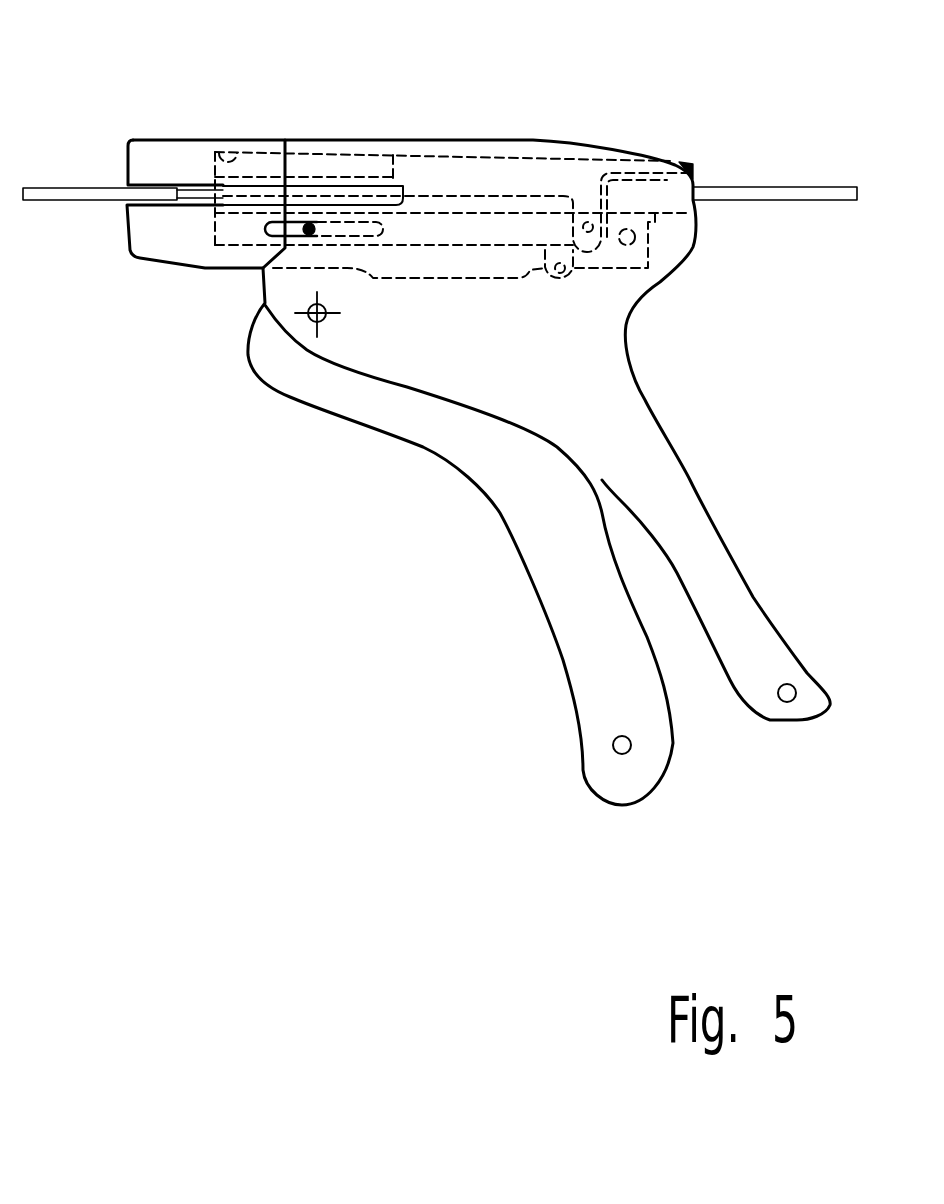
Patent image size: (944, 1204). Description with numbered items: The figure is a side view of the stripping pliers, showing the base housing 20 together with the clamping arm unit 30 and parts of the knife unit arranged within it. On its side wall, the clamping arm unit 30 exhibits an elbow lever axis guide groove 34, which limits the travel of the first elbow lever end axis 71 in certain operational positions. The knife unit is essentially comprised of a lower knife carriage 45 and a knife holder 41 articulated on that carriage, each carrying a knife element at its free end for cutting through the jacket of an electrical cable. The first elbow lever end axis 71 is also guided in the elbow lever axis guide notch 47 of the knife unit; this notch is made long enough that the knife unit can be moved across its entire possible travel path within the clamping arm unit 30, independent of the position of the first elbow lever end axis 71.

The base housing 20 is at (595, 140).
The clamping arm unit 30 is at (180, 248).
The elbow lever axis guide groove 34 is at (270, 223).
The knife holder 41 is at (403, 158).
The knife carriage 45 is at (452, 212).
The elbow lever axis guide notch 47 is at (357, 225).
The first elbow lever end axis 71 is at (310, 224).